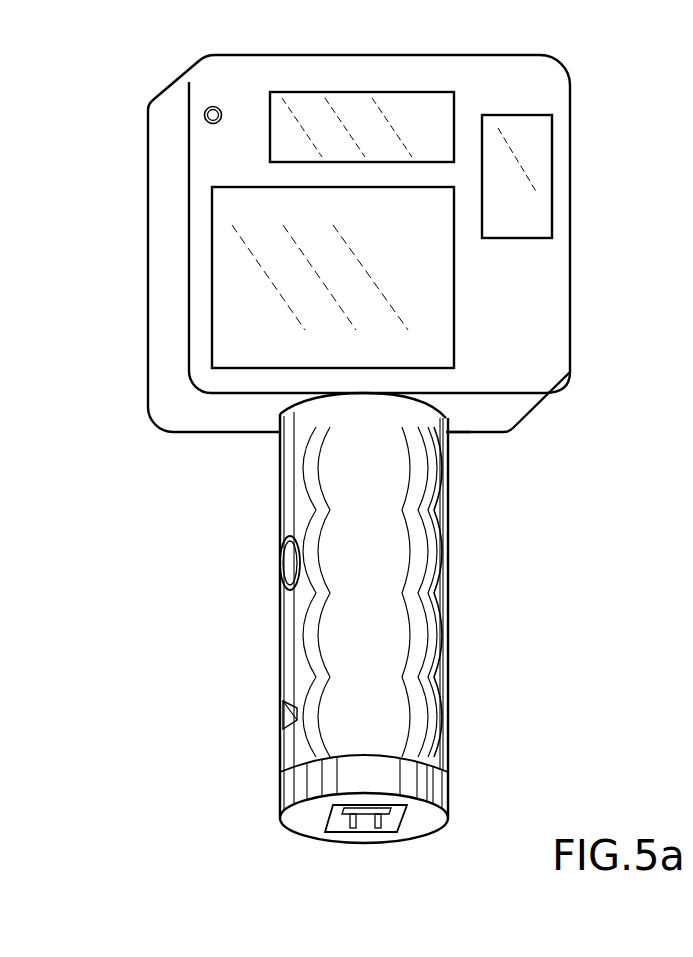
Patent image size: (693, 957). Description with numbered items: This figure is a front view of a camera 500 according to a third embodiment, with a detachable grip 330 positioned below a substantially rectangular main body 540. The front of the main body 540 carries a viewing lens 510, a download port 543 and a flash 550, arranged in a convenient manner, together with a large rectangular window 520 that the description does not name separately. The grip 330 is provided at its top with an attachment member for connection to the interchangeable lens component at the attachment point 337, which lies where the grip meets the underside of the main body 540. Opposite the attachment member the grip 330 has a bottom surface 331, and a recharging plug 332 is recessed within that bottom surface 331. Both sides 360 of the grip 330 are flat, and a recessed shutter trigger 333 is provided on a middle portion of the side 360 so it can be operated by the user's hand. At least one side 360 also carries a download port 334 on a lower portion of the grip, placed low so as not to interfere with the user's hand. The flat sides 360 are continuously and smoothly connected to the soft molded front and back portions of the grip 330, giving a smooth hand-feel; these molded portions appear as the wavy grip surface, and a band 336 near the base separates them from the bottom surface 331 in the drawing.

The camera 500 is at (168, 518).
The main body 540 is at (198, 298).
The download port 543 is at (212, 114).
The viewing lens 510 is at (401, 138).
The display screen 520 is at (275, 345).
The flash 550 is at (535, 133).
The sides 360 is at (281, 497).
The grip 330 is at (500, 545).
The attachment point 337 is at (448, 420).
The shutter trigger 333 is at (284, 562).
The download port 334 is at (285, 712).
The base ring 336 is at (284, 790).
The bottom surface 331 is at (422, 822).
The recharging plug 332 is at (338, 822).